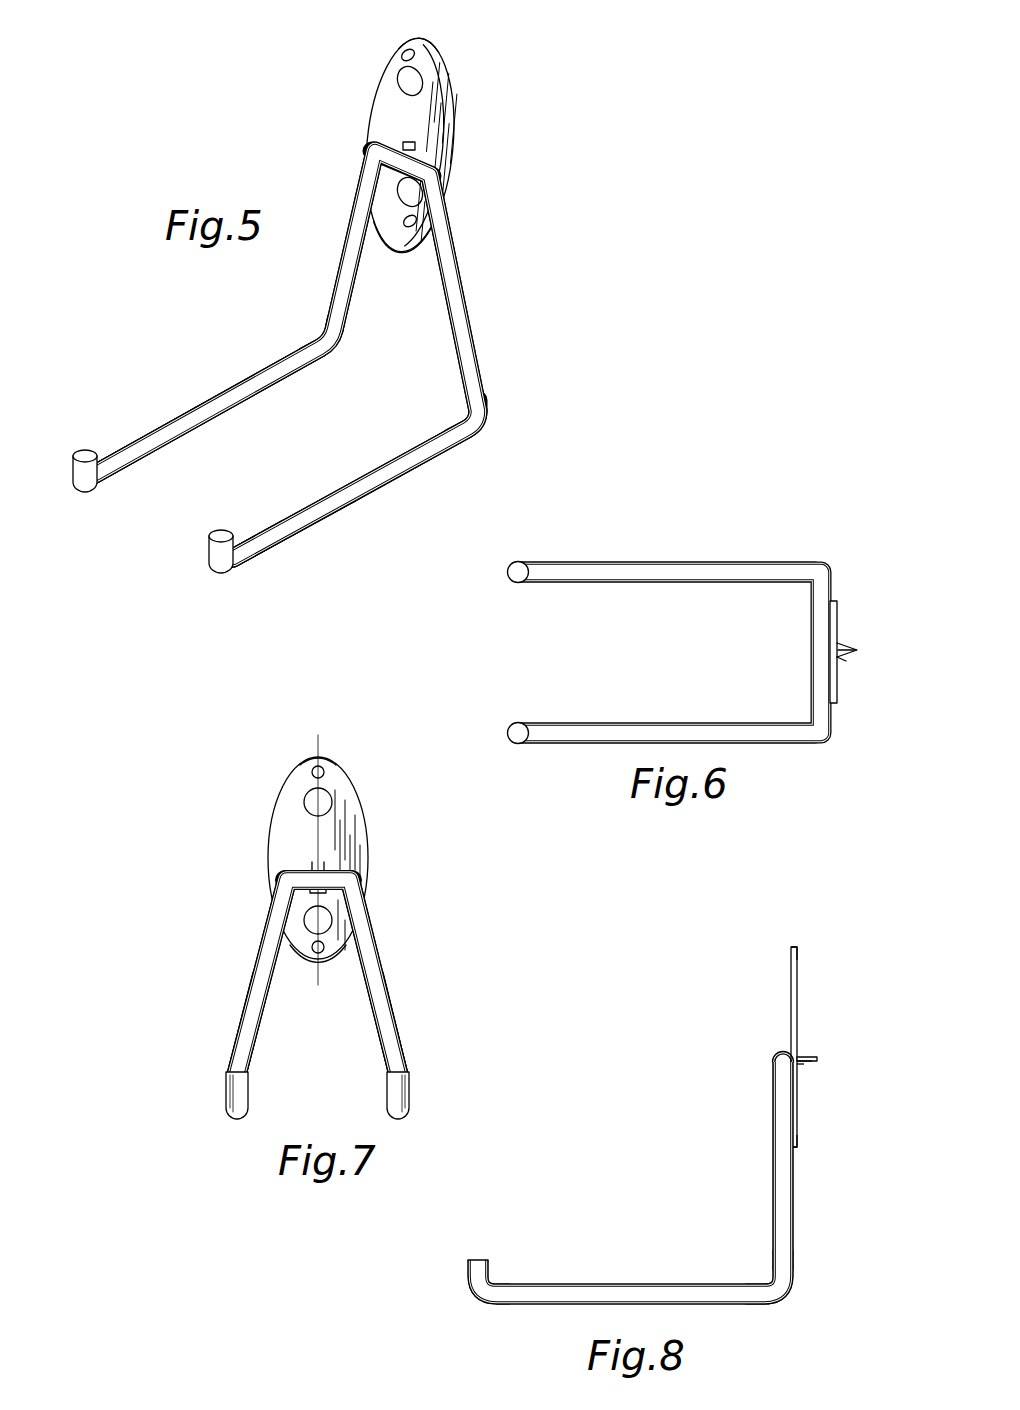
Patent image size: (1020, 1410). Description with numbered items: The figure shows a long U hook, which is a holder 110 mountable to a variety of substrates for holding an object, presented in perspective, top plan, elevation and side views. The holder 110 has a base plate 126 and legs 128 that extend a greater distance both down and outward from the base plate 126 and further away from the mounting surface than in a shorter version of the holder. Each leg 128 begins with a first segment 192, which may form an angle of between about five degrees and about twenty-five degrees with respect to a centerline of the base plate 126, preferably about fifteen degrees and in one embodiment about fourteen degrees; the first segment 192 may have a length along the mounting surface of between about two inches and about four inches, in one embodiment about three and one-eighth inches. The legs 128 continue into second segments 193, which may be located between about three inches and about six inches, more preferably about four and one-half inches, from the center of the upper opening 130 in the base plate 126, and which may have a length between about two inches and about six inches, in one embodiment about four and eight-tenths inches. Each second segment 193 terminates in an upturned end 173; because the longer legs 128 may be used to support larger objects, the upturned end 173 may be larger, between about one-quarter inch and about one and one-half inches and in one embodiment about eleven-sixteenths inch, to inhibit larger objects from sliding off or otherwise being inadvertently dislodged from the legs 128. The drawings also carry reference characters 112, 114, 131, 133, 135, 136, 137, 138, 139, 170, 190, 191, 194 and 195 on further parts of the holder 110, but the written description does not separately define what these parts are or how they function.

In FIG. 5, the holder 110 is at (320, 314).
In FIG. 6, the mounting tang 112 is at (841, 662).
In FIG. 8, the mounting tang 112 is at (800, 1065).
In FIG. 6, the slot 114 is at (860, 653).
In FIG. 8, the slot 114 is at (817, 1061).
In FIG. 5, the base plate 126 is at (372, 107).
In FIG. 6, the base plate 126 is at (840, 616).
In FIG. 7, the base plate 126 is at (352, 808).
In FIG. 8, the base plate 126 is at (791, 985).
In FIG. 5, the legs 128 is at (290, 392).
In FIG. 7, the legs 128 is at (245, 1022).
In FIG. 5, the upper opening 130 is at (399, 82).
In FIG. 7, the upper opening 130 is at (304, 805).
In FIG. 5, the small fastener hole 131 is at (402, 55).
In FIG. 7, the small fastener hole 131 is at (311, 771).
In FIG. 6, the hook tab 133 is at (850, 646).
In FIG. 8, the hook tab 133 is at (817, 1056).
In FIG. 5, the retaining tab 135 is at (405, 140).
In FIG. 7, the notch 136 is at (312, 865).
In FIG. 7, the retainer 137 is at (308, 892).
In FIG. 5, the upper end of plate 138 is at (404, 40).
In FIG. 7, the upper end of plate 138 is at (327, 757).
In FIG. 8, the upper end of plate 138 is at (797, 947).
In FIG. 5, the lower end of plate 139 is at (435, 248).
In FIG. 7, the lower end of plate 139 is at (312, 958).
In FIG. 8, the lower end of plate 139 is at (797, 1148).
In FIG. 5, the arm end portion 170 is at (165, 478).
In FIG. 5, the upturned end 173 is at (83, 450).
In FIG. 6, the upturned end 173 is at (512, 570).
In FIG. 7, the upturned end 173 is at (230, 1093).
In FIG. 8, the upturned end 173 is at (467, 1284).
In FIG. 5, the wire hook body 190 is at (468, 352).
In FIG. 5, the transverse top segment 191 is at (425, 165).
In FIG. 7, the transverse top segment 191 is at (340, 872).
In FIG. 5, the first segment 192 is at (357, 197).
In FIG. 7, the first segment 192 is at (265, 930).
In FIG. 8, the first segment 192 is at (794, 1180).
In FIG. 5, the second segment 193 is at (232, 425).
In FIG. 6, the second segment 193 is at (710, 568).
In FIG. 8, the second segment 193 is at (668, 1285).
In FIG. 5, the bend 194 is at (345, 350).
In FIG. 8, the bend 194 is at (788, 1250).
In FIG. 5, the arm upper surface 195 is at (240, 395).